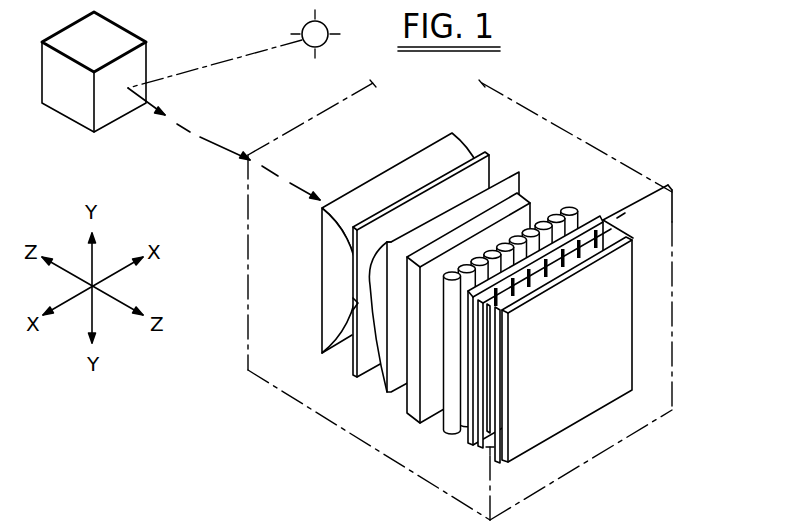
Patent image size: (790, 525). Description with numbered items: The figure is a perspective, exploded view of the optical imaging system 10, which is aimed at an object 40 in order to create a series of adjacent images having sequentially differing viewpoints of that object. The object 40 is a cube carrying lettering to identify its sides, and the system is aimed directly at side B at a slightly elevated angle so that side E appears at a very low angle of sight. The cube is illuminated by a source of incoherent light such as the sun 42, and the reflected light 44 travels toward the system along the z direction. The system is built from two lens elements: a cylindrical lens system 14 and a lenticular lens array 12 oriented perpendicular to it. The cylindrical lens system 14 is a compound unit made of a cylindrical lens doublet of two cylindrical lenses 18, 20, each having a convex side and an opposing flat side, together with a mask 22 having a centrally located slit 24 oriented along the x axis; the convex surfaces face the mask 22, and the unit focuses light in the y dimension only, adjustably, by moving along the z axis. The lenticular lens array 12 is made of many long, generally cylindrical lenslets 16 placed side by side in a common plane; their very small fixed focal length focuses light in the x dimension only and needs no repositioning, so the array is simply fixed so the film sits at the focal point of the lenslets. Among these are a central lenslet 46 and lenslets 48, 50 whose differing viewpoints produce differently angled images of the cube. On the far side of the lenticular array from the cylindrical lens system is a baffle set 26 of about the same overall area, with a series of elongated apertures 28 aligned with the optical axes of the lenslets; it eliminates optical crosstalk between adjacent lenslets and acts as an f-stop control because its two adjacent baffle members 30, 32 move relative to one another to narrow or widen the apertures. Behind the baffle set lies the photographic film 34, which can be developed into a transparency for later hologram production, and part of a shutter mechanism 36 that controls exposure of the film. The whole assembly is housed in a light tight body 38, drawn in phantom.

The optical imaging system 10 is at (622, 182).
The lenticular lens array 12 is at (582, 192).
The cylindrical lens system 14 is at (452, 124).
The lenslets 16 is at (553, 207).
The cylindrical lens 18 is at (387, 392).
The cylindrical lens 20 is at (322, 353).
The mask 22 is at (355, 375).
The slit 24 is at (353, 302).
The baffle set 26 is at (668, 185).
The elongated apertures 28 is at (607, 255).
The baffle member 30 is at (481, 452).
The baffle member 32 is at (467, 446).
The photographic film 34 is at (588, 357).
The shutter mechanism 36 is at (407, 412).
The light tight body 38 is at (676, 375).
The object 40 is at (72, 122).
The sun 42 is at (302, 26).
The reflected light 44 is at (213, 147).
The lenslet 46 is at (508, 235).
The lenslet 48 is at (445, 434).
The lenslet 50 is at (578, 200).